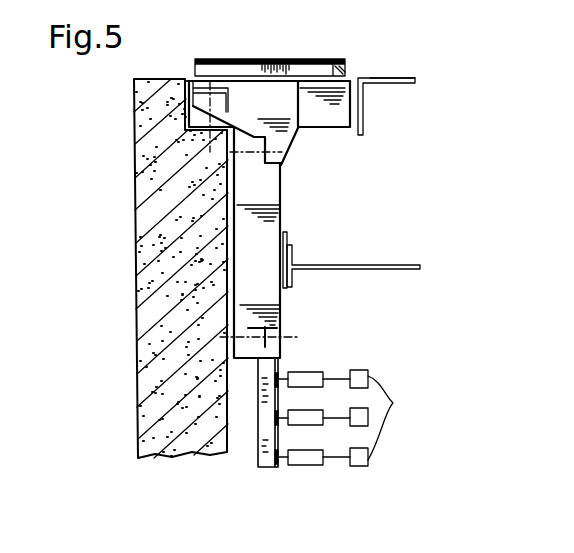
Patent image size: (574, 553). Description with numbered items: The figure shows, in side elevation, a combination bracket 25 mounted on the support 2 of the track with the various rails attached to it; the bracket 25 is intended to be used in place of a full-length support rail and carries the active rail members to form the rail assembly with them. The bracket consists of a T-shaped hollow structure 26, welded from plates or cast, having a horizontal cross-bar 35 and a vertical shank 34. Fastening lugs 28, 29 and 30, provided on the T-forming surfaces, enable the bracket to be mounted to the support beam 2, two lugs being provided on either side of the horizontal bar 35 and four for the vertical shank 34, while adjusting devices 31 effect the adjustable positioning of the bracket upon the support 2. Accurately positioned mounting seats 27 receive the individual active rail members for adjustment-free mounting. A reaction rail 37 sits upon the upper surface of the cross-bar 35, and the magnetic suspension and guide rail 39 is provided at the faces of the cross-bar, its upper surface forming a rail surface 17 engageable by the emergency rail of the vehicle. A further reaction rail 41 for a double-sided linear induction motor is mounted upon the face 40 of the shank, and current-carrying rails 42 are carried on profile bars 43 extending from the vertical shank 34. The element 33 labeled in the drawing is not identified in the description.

The support beam 2 is at (140, 117).
The rail surface 17 is at (380, 77).
The combination bracket 25 is at (408, 187).
The T-shaped hollow structure 26 is at (281, 228).
The mounting seats 27 is at (292, 78).
The fastening lug 28 is at (281, 333).
The fastening lug 29 is at (258, 148).
The fastening lug 30 is at (192, 80).
The adjusting devices 31 is at (222, 140).
The wall lining 33 is at (240, 257).
The vertical shank 34 is at (248, 290).
The horizontal bar 35 is at (294, 138).
The reaction rail 37 is at (322, 58).
The magnetic suspension and guide rail 39 is at (422, 40).
The face of the shank 40 is at (283, 315).
The further reaction rail 41 is at (378, 265).
The current-carrying rails 42 is at (393, 403).
The profile bars 43 is at (259, 413).